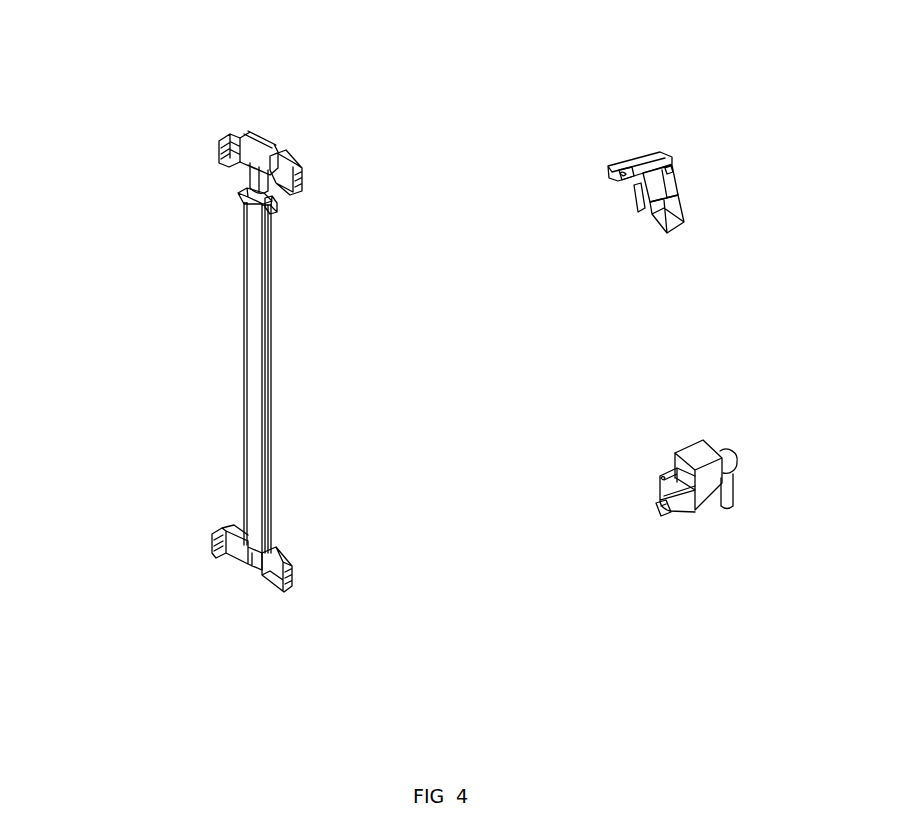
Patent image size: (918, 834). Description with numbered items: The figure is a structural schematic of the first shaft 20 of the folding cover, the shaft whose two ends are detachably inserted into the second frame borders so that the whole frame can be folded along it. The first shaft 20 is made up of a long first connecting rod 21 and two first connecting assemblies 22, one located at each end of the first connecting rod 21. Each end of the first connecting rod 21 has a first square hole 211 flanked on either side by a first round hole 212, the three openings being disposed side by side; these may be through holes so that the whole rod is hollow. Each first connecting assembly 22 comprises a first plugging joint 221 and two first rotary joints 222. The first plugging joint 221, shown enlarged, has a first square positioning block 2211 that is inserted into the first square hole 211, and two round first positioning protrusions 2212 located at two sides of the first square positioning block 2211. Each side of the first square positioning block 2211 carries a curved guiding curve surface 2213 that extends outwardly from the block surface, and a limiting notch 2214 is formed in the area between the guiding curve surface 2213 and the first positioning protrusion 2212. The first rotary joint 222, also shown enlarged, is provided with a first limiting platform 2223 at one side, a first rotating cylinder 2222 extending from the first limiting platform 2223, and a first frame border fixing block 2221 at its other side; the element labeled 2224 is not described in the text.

The first shaft 20 is at (150, 332).
The first connecting rod 21 is at (257, 287).
The first square hole 211 is at (247, 203).
The first round hole 212 is at (237, 192).
The first connecting assembly 22 is at (217, 106).
The first plugging joint 221 is at (258, 153).
The first square positioning block 2211 is at (672, 217).
The first positioning protrusion 2212 is at (618, 197).
The guiding curve surface 2213 is at (638, 197).
The limiting notch 2214 is at (633, 178).
The first rotary joint 222 is at (300, 187).
The first frame border fixing block 2221 is at (660, 510).
The first rotating cylinder 2222 is at (731, 493).
The first limiting platform 2223 is at (723, 458).
The housing 2224 is at (660, 478).